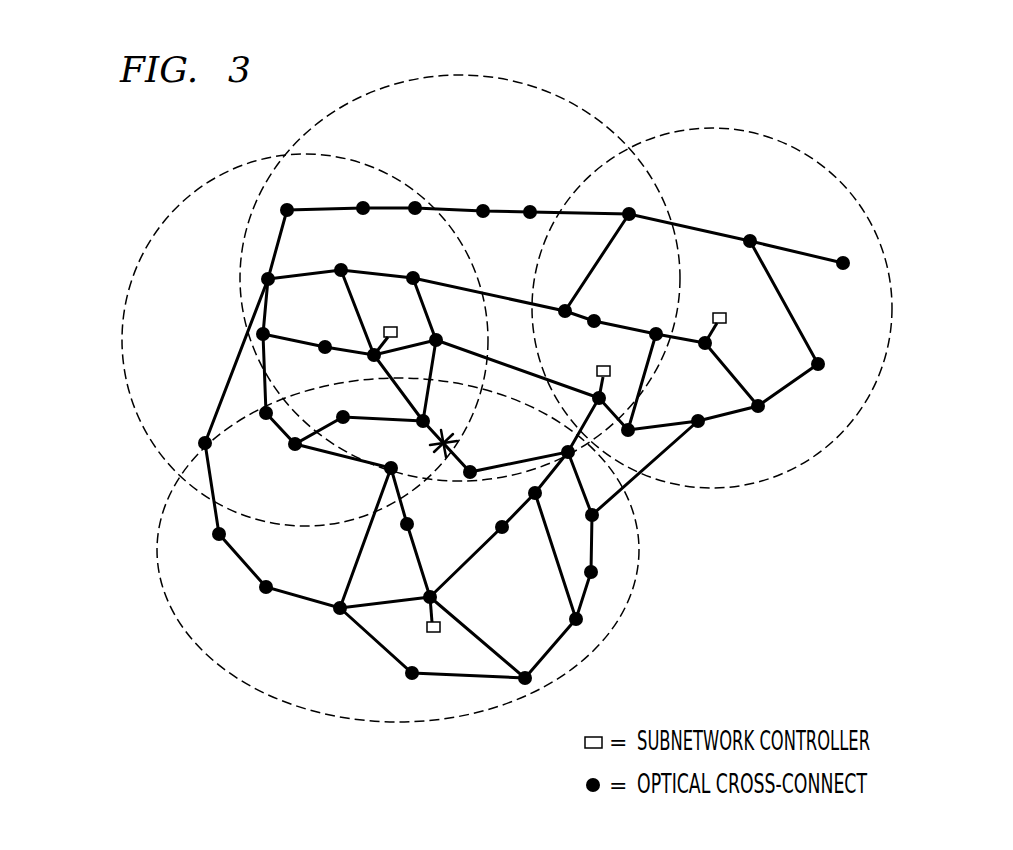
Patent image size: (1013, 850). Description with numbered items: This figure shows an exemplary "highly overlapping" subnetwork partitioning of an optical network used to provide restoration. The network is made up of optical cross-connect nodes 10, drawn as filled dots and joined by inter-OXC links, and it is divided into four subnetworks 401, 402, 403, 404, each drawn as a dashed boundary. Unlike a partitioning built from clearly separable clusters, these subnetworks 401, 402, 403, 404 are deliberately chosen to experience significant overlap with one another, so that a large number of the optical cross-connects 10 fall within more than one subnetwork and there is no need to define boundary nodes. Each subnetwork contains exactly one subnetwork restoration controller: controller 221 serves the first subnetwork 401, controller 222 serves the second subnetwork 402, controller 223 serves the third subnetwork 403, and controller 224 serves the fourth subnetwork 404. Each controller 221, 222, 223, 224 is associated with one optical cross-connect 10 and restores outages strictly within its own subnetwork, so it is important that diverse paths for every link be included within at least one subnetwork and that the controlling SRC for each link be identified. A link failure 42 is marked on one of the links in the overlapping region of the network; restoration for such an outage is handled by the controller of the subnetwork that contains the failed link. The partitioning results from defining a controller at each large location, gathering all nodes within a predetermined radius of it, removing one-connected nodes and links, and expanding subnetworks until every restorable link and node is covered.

The optical cross-connect 10 is at (360, 212).
The subnetwork restoration controller 221 is at (388, 327).
The subnetwork restoration controller 222 is at (427, 628).
The subnetwork restoration controller 223 is at (597, 370).
The subnetwork restoration controller 224 is at (719, 313).
The highly overlapping subnetwork 401 is at (125, 322).
The highly overlapping subnetwork 402 is at (230, 700).
The highly overlapping subnetwork 403 is at (587, 103).
The highly overlapping subnetwork 404 is at (782, 145).
The link failure 42 is at (460, 462).